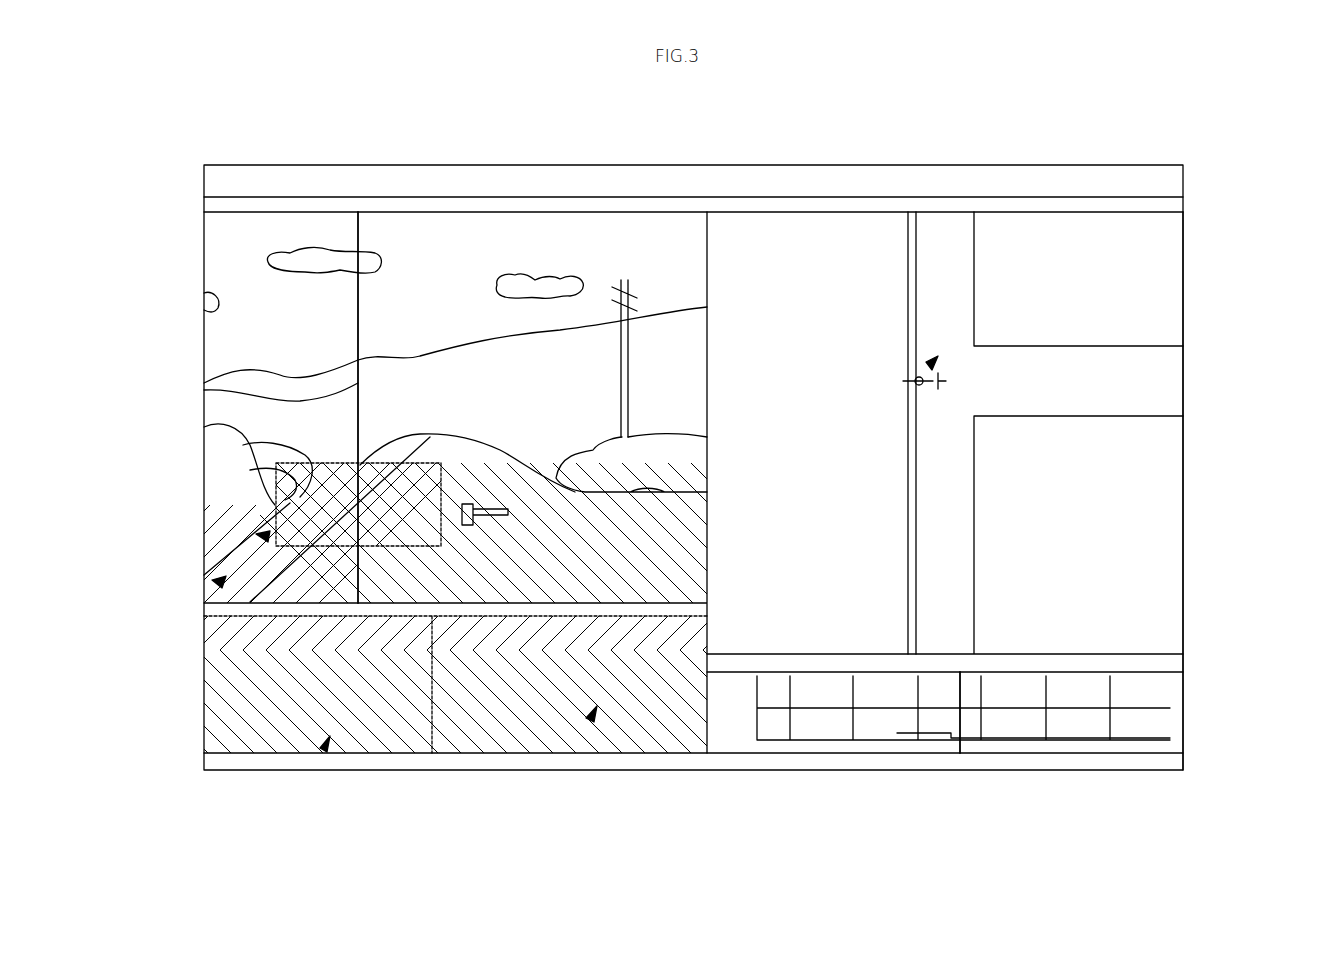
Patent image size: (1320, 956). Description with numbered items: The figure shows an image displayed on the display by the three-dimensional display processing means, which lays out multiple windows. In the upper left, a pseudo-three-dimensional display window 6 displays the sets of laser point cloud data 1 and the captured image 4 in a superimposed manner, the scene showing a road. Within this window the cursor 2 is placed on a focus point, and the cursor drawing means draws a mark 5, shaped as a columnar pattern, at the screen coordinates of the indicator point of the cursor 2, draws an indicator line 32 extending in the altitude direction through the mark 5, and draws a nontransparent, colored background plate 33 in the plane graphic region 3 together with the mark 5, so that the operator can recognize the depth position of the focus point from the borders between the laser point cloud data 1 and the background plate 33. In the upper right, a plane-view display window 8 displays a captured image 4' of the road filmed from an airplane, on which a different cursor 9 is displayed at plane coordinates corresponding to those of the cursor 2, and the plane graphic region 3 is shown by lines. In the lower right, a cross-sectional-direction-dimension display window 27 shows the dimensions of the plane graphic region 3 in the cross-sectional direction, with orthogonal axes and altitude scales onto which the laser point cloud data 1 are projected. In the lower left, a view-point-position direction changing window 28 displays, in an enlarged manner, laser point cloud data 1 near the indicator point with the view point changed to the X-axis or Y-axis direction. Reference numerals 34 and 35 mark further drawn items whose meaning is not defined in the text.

The laser point cloud data 1 is at (214, 582).
The cursor 2 is at (214, 547).
The plane graphic region 3 is at (275, 468).
The captured image 4 is at (411, 482).
The captured image 4' is at (1116, 361).
The mark 5 is at (254, 536).
The pseudo-three-dimensional display window 6 is at (214, 305).
The plane-view display window 8 is at (1175, 228).
The cursor 9 is at (928, 364).
The cross-sectional-direction-dimension display window 27 is at (1165, 700).
The view-point-position direction changing window 28 is at (212, 755).
The indicator line 32 is at (204, 390).
The background plate 33 is at (275, 447).
The divider line 34 is at (390, 604).
The marker 35 is at (493, 517).